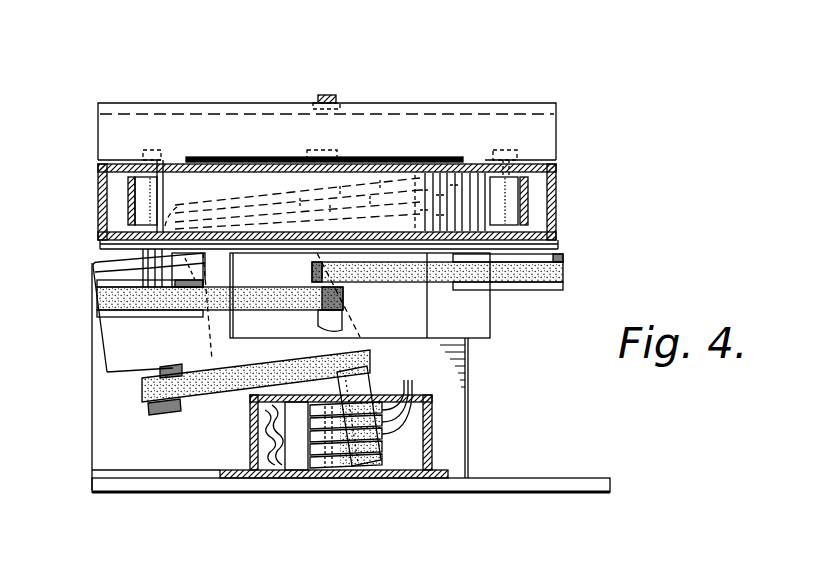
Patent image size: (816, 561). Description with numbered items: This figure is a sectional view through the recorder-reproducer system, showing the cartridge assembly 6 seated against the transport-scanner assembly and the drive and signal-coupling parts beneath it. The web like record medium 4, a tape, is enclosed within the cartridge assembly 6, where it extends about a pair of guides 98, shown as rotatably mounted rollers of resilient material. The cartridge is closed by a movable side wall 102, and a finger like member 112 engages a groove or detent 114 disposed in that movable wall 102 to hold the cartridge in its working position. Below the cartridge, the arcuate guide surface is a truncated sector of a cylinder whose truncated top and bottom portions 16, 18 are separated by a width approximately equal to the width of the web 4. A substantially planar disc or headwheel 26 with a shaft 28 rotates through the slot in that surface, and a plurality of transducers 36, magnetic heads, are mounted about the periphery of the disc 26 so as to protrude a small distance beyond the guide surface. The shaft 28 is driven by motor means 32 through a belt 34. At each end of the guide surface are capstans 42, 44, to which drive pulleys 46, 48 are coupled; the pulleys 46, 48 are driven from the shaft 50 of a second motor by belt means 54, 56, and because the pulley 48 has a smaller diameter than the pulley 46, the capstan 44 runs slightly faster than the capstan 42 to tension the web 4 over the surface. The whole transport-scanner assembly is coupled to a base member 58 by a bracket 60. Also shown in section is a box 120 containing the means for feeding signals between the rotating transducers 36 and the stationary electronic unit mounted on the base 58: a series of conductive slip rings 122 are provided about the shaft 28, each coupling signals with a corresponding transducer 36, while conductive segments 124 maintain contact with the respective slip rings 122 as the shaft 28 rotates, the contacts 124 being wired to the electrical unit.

The web like record medium 4 is at (212, 195).
The cartridge assembly 6 is at (557, 188).
The truncated top portion 16 is at (363, 164).
The truncated bottom portion 18 is at (396, 200).
The disc or headwheel 26 is at (408, 160).
The shaft 28 is at (318, 148).
The motor means 32 is at (123, 353).
The belt 34 is at (230, 388).
The transducers 36 is at (312, 250).
The capstan 42 is at (150, 153).
The capstan 44 is at (515, 155).
The drive pulley 46 is at (128, 291).
The drive pulley 48 is at (563, 256).
The shaft 50 is at (343, 320).
The belt means 54 is at (155, 298).
The belt means 56 is at (492, 273).
The base member 58 is at (548, 482).
The bracket 60 is at (102, 263).
The guides 98 is at (145, 195).
The movable side wall 102 is at (435, 117).
The finger like member 112 is at (336, 96).
The groove or detent 114 is at (312, 104).
The box 120 is at (433, 432).
The slip rings 122 is at (410, 390).
The conductive segments 124 is at (325, 425).